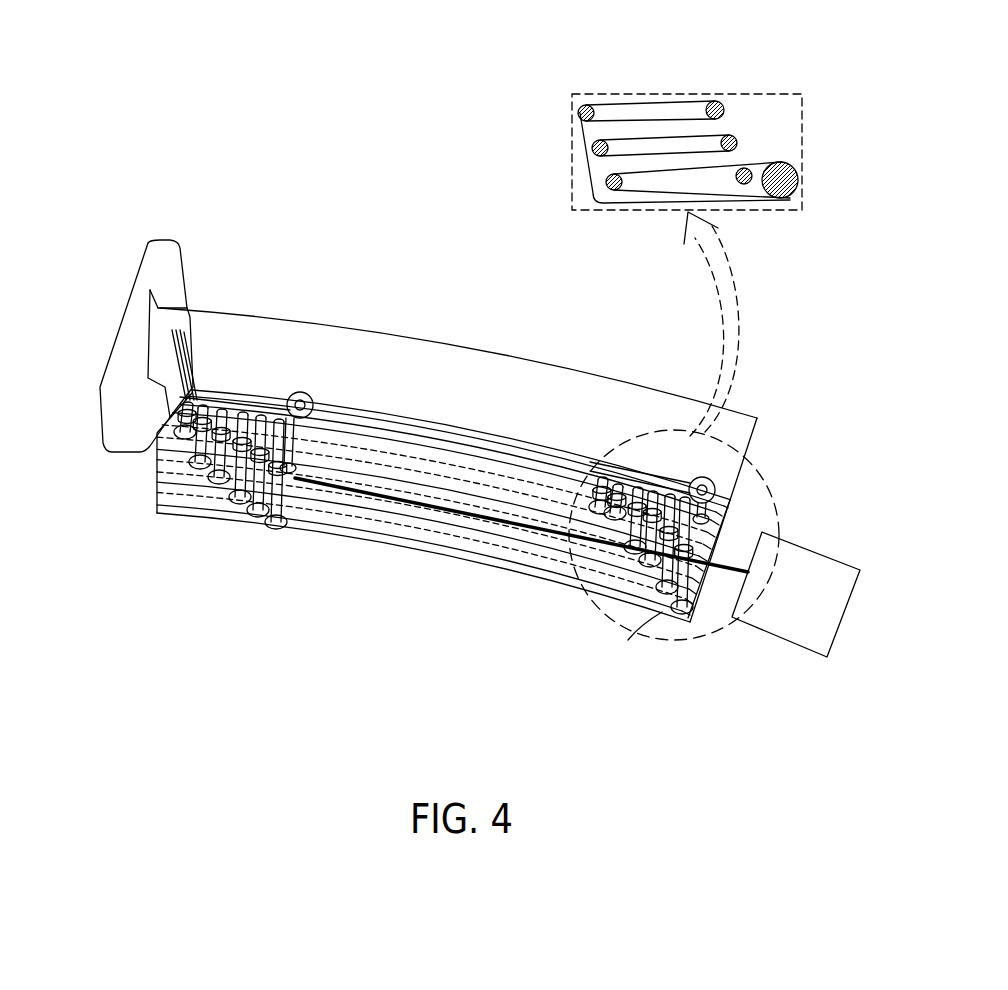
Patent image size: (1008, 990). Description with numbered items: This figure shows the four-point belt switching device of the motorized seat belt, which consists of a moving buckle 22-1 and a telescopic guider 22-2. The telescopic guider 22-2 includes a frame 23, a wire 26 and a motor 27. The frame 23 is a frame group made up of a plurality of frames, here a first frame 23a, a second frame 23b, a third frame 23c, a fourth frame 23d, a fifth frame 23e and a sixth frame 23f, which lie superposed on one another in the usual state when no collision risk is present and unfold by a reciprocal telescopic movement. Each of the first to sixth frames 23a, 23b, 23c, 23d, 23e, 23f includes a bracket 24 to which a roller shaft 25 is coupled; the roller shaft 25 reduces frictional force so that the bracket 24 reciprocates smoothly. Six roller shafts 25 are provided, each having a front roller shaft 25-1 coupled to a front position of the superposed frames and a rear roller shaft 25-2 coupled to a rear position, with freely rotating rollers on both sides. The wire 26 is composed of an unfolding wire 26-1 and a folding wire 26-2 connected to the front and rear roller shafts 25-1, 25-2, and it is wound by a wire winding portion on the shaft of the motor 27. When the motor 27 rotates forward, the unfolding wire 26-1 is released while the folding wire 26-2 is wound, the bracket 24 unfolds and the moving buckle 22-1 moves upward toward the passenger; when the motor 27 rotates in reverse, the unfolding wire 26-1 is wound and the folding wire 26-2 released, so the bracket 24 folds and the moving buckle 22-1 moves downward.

The moving buckle 22-1 is at (140, 323).
The telescopic guider 22-2 is at (565, 352).
The frame 23 is at (462, 390).
The first frame 23a is at (185, 432).
The second frame 23b is at (200, 462).
The third frame 23c is at (219, 477).
The fourth frame 23d is at (240, 497).
The fifth frame 23e is at (258, 510).
The sixth frame 23f is at (276, 522).
The bracket 24 is at (707, 468).
The roller shaft 25 is at (562, 581).
The front roller shaft 25-1 is at (662, 620).
The rear roller shaft 25-2 is at (300, 472).
The wire 26 is at (428, 589).
The unfolding wire 26-1 is at (538, 512).
The folding wire 26-2 is at (470, 500).
The motor 27 is at (783, 642).